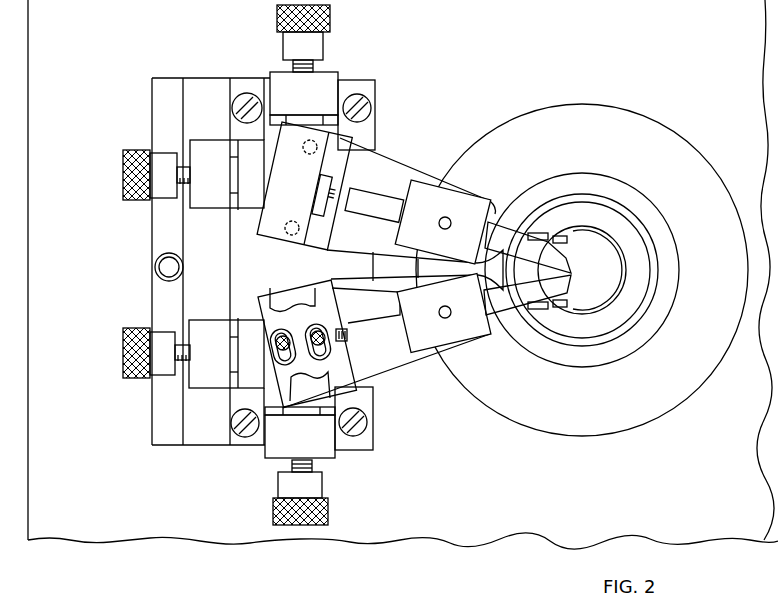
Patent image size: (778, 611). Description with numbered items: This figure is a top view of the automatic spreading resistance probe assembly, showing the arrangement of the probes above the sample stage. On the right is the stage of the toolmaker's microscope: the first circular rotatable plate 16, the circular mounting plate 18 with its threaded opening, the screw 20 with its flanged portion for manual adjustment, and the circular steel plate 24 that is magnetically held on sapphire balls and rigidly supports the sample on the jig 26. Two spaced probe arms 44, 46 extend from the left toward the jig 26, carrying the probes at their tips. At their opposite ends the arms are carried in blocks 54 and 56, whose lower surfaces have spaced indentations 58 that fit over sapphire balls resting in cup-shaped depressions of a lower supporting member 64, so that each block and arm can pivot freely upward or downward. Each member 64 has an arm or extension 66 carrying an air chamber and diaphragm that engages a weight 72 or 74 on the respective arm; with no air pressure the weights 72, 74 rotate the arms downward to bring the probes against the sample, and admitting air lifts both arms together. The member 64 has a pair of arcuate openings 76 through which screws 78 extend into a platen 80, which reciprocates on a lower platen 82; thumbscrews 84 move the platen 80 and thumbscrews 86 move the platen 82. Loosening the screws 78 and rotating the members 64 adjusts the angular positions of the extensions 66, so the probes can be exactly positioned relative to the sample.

The first circular rotatable plate 16 is at (700, 395).
The circular mounting plate 18 is at (678, 292).
The screw 20 is at (662, 267).
The circular steel plate 24 is at (650, 252).
The jig 26 is at (620, 250).
The probe arm 44 is at (514, 312).
The probe arm 46 is at (404, 188).
The block 54 is at (328, 388).
The block 56 is at (322, 150).
The indentations 58 is at (309, 155).
The lower supporting member 64 is at (452, 187).
The arm or extension 66 is at (372, 247).
The weight 72 is at (405, 305).
The weight 74 is at (405, 234).
The arcuate openings 76 is at (268, 360).
The screws 78 is at (272, 340).
The platen 80 is at (333, 128).
The lower platen 82 is at (255, 172).
The thumbscrews 84 is at (331, 16).
The thumbscrews 86 is at (139, 150).